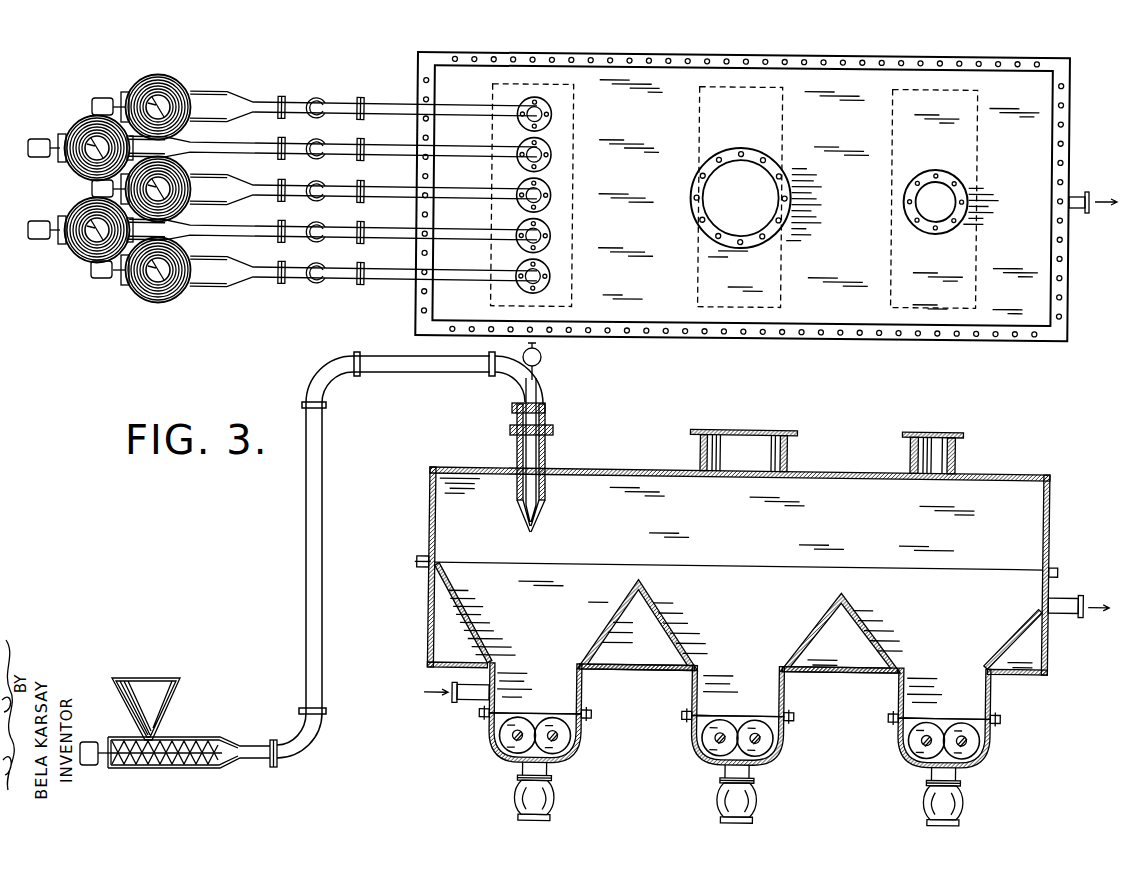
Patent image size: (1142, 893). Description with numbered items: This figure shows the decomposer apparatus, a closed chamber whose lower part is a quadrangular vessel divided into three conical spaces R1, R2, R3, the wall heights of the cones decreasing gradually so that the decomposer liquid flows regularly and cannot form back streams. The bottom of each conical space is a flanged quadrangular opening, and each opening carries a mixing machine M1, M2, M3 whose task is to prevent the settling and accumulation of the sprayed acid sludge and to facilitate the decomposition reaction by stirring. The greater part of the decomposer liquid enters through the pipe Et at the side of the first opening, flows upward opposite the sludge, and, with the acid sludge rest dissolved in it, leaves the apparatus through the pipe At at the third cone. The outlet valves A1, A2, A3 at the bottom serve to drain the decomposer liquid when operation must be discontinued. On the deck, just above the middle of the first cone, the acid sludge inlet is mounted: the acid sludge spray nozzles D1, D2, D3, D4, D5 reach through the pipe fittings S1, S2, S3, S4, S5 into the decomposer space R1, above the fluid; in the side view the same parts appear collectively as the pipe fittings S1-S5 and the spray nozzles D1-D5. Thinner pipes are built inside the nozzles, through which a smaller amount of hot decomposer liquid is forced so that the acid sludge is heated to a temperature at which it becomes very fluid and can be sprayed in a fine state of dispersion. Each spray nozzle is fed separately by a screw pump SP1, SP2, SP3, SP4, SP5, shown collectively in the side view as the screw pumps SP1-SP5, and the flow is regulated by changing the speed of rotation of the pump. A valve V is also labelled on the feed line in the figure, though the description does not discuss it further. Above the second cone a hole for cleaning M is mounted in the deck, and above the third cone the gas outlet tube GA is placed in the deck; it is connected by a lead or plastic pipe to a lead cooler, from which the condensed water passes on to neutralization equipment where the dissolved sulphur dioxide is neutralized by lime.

The screw pump SP1 is at (155, 102).
The screw pump SP2 is at (80, 145).
The screw pump SP3 is at (157, 189).
The screw pump SP4 is at (80, 227).
The screw pump SP5 is at (155, 278).
The pipe fitting S1 is at (363, 105).
The pipe fitting S2 is at (333, 145).
The pipe fitting S3 is at (363, 187).
The pipe fitting S4 is at (333, 225).
The pipe fitting S5 is at (363, 282).
The acid sludge spray nozzle D1 is at (545, 121).
The acid sludge spray nozzle D2 is at (545, 162).
The acid sludge spray nozzle D3 is at (544, 203).
The acid sludge spray nozzle D4 is at (544, 242).
The acid sludge spray nozzle D5 is at (544, 284).
The hole for cleaning M is at (744, 279).
The gas outlet tube GA is at (934, 282).
The pipe At is at (1082, 395).
The valve V is at (532, 361).
The screw pumps SP1-SP5 is at (178, 739).
The pipe fittings S1-S5 is at (555, 441).
The acid sludge spray nozzles D1-D5 is at (558, 517).
The conical space R1 is at (565, 617).
The conical space R2 is at (817, 632).
The conical space R3 is at (989, 639).
The mixing machine M1 is at (546, 742).
The mixing machine M2 is at (748, 744).
The mixing machine M3 is at (954, 747).
The outlet valve A1 is at (568, 802).
The outlet valve A2 is at (771, 804).
The outlet valve A3 is at (976, 807).
The pipe Et is at (452, 704).